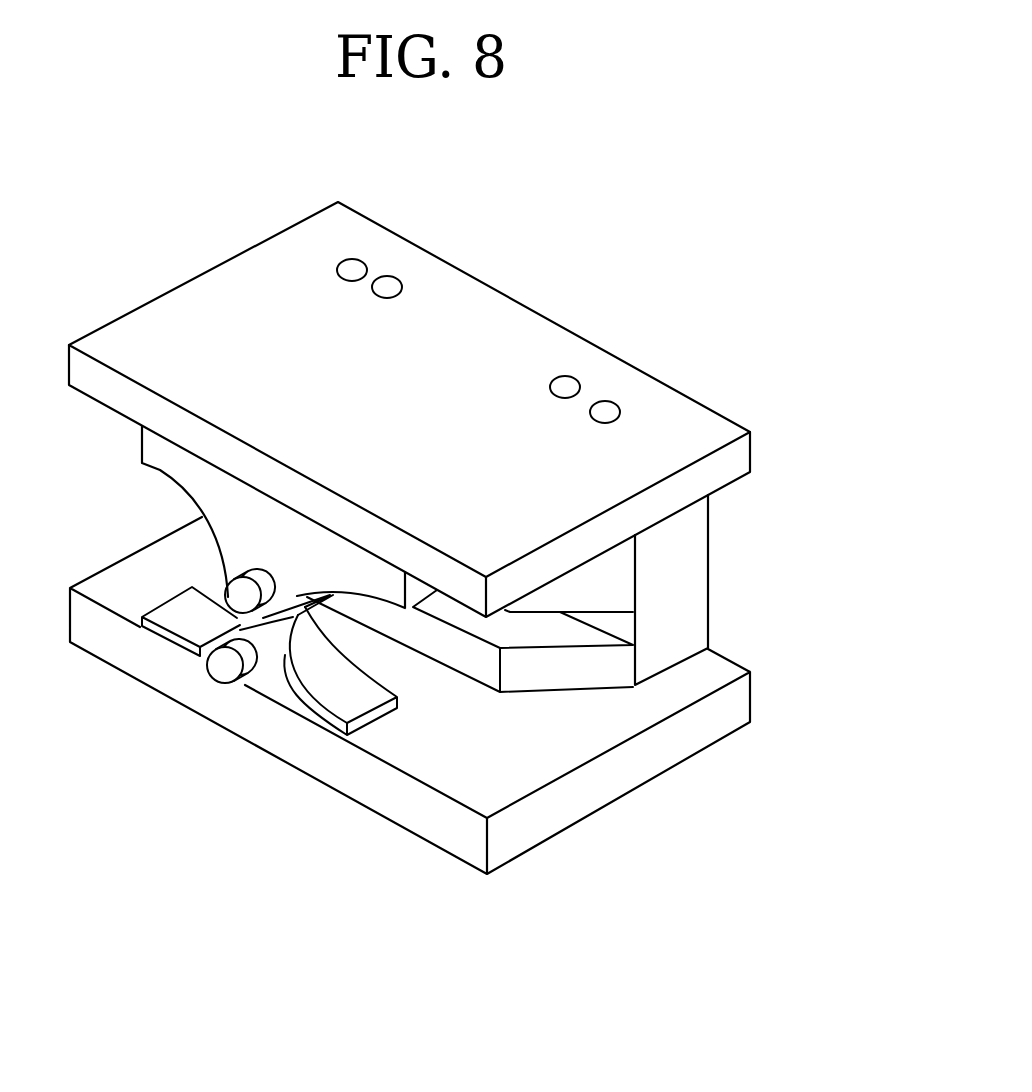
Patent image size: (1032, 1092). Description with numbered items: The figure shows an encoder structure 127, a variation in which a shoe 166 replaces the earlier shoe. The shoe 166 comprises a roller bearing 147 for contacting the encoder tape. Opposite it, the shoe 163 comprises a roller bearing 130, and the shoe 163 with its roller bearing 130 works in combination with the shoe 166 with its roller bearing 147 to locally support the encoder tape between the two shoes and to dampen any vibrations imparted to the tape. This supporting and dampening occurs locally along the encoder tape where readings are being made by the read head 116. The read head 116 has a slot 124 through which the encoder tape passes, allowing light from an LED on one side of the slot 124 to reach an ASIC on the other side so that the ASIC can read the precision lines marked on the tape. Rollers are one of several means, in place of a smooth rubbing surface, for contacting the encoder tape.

The encoder structure 127 is at (108, 245).
The shoe 163 is at (477, 370).
The read head 116 is at (710, 620).
The shoe 166 is at (522, 835).
The slot 124 is at (584, 645).
The roller bearing 130 is at (262, 614).
The roller bearing 147 is at (288, 642).